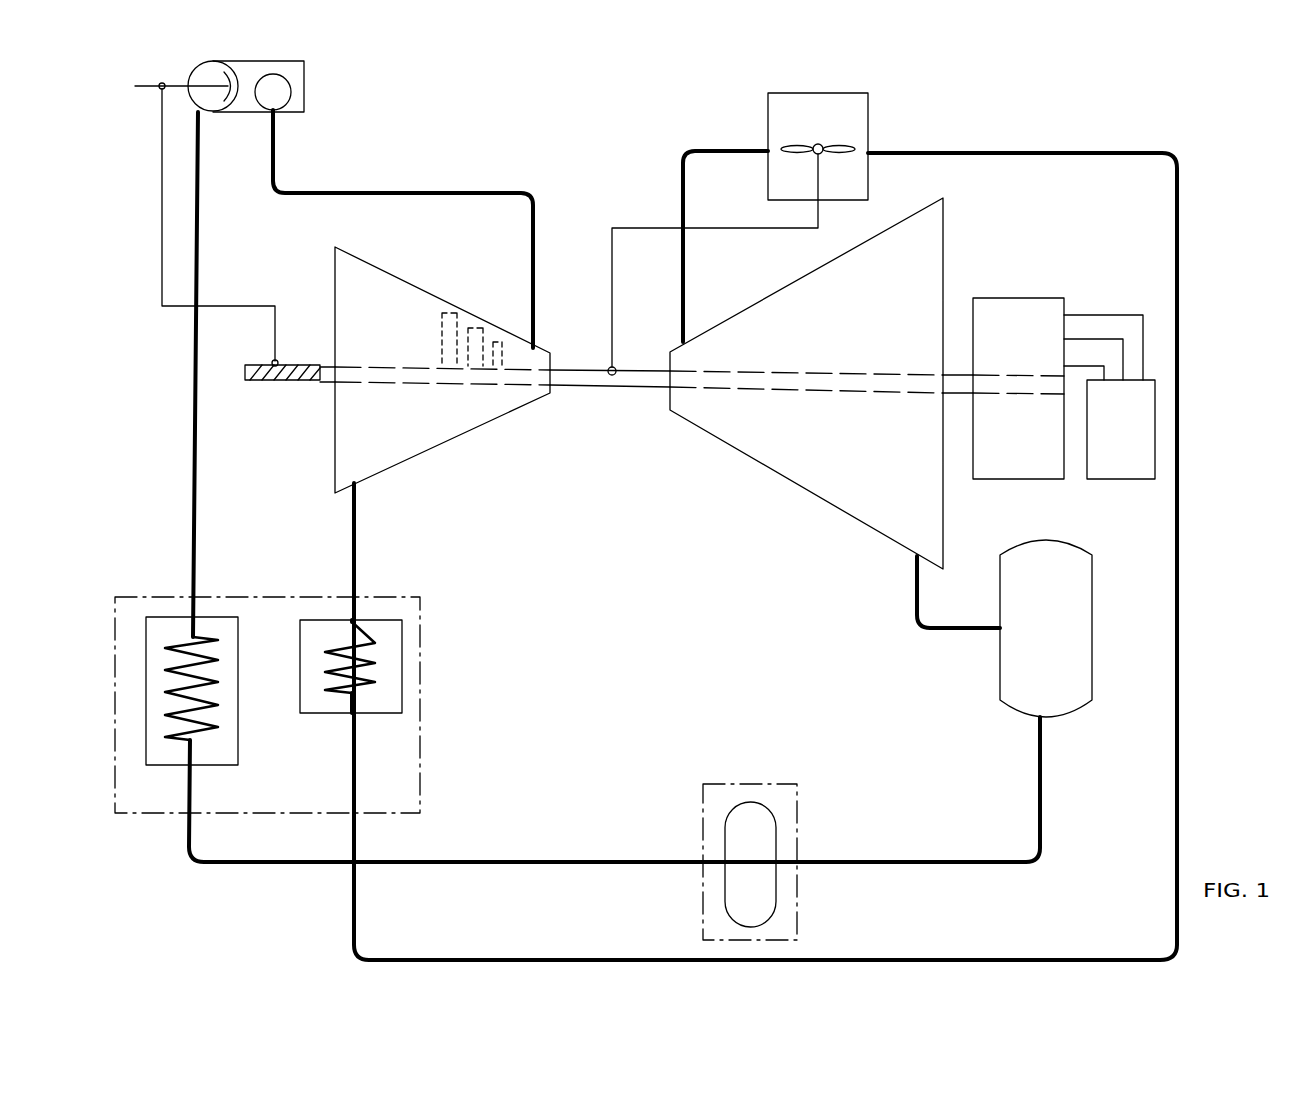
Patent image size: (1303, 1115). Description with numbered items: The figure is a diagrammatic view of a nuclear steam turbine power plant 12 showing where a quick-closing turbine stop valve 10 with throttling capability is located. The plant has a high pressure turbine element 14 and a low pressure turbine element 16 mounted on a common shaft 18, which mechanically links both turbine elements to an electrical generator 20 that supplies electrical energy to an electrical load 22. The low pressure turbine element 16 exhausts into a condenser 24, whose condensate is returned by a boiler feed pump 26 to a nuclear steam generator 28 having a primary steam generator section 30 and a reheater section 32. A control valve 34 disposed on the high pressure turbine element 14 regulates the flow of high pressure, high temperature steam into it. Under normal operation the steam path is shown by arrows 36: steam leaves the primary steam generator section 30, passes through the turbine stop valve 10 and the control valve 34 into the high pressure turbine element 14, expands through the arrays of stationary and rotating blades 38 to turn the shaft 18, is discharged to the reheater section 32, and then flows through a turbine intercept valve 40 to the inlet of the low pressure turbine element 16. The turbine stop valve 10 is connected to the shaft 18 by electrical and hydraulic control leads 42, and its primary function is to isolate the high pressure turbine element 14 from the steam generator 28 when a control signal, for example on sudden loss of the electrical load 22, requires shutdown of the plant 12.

The turbine stop valve 10 is at (258, 56).
The nuclear steam turbine power plant 12 is at (646, 657).
The high pressure turbine element 14 is at (482, 417).
The low pressure turbine element 16 is at (780, 464).
The common shaft 18 is at (602, 378).
The electrical generator 20 is at (1017, 310).
The electrical load 22 is at (1134, 447).
The condenser 24 is at (1048, 646).
The boiler feed pump 26 is at (763, 862).
The steam generator 28 is at (271, 724).
The primary steam generator section 30 is at (165, 765).
The reheater section 32 is at (300, 660).
The control valve 34 is at (285, 98).
The arrows 36 is at (189, 190).
The arrays of stationary and rotating blades 38 is at (442, 341).
The turbine intercept valve 40 is at (845, 90).
The electrical and hydraulic control leads 42 is at (160, 290).